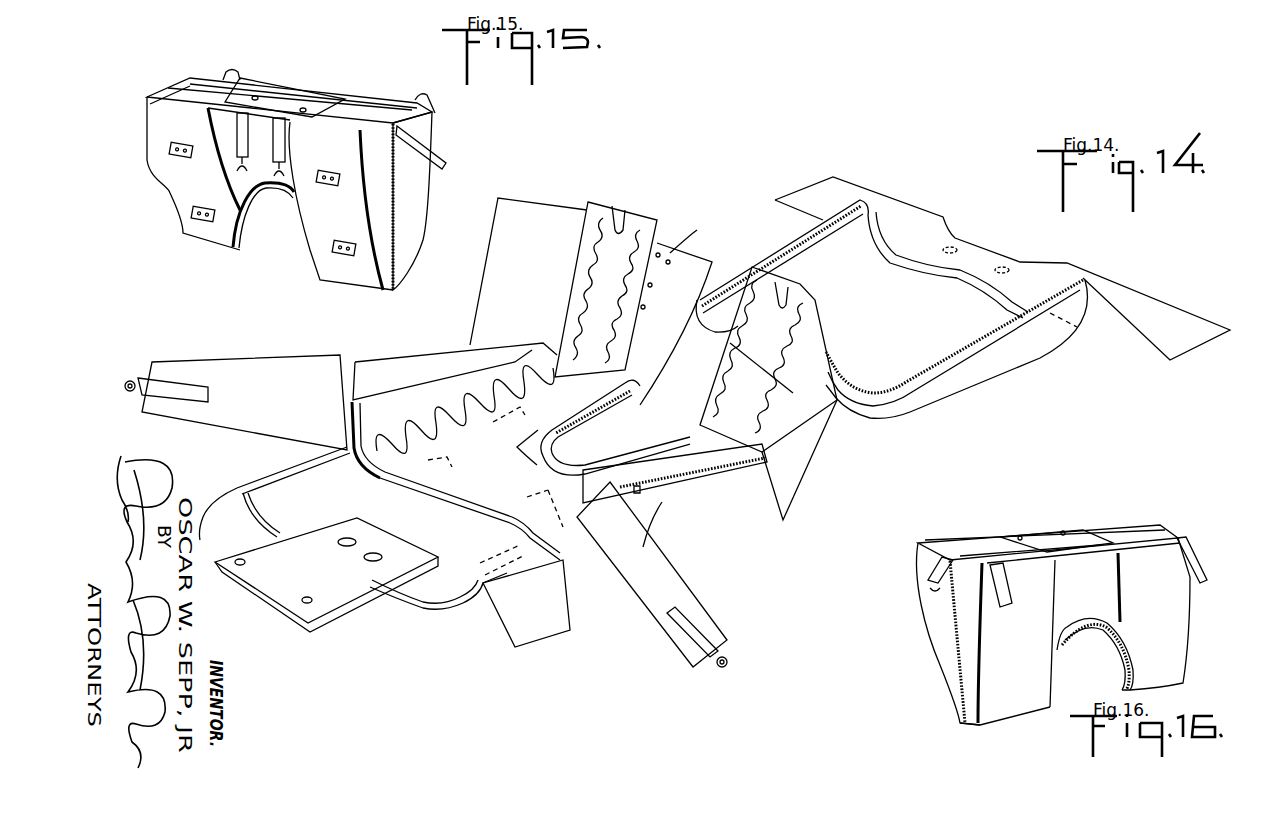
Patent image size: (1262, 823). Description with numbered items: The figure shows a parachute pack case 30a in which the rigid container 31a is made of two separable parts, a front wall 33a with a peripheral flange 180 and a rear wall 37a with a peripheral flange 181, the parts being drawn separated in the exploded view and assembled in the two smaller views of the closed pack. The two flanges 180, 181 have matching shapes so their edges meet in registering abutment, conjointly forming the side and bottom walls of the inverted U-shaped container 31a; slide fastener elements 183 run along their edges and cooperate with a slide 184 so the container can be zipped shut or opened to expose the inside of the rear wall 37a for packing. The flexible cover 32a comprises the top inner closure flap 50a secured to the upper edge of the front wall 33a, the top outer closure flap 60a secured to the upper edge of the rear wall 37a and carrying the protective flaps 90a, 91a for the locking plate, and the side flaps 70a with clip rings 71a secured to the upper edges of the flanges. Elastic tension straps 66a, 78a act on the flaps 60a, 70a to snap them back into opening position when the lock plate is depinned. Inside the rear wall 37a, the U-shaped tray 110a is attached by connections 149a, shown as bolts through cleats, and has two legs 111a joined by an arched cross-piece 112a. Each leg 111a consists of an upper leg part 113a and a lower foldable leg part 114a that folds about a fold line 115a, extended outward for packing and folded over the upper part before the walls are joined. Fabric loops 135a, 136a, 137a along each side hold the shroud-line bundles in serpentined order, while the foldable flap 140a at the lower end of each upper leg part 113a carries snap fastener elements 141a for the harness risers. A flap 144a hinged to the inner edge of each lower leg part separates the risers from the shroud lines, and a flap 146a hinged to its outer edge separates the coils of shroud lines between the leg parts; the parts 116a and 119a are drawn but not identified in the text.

In FIG. 15, the case 30a is at (165, 200).
In FIG. 14, the case 30a is at (693, 505).
In FIG. 15, the rigid container 31a is at (418, 238).
In FIG. 15, the flexible cover 32a is at (160, 90).
In FIG. 14, the flexible cover 32a is at (430, 622).
In FIG. 15, the front wall 33a is at (428, 195).
In FIG. 14, the front wall 33a is at (952, 395).
In FIG. 16, the front wall 33a is at (1177, 643).
In FIG. 15, the rear wall 37a is at (333, 210).
In FIG. 14, the rear wall 37a is at (715, 493).
In FIG. 14, the top inner closure flap 50a is at (983, 247).
In FIG. 14, the top outer closure flap 60a is at (408, 583).
In FIG. 15, the elastic tension strap 66a is at (200, 78).
In FIG. 16, the elastic tension strap 66a is at (930, 572).
In FIG. 15, the side flap 70a is at (215, 72).
In FIG. 14, the side flap 70a is at (250, 368).
In FIG. 16, the side flap 70a is at (958, 543).
In FIG. 14, the clip ring 71a is at (128, 380).
In FIG. 15, the elastic tension strap 78a is at (282, 150).
In FIG. 15, the protective flap 90a is at (285, 88).
In FIG. 14, the protective flap 90a is at (285, 605).
In FIG. 16, the protective flap 90a is at (1045, 535).
In FIG. 14, the protective flap 91a is at (265, 570).
In FIG. 14, the tray 110a is at (362, 450).
In FIG. 14, the leg 111a is at (508, 405).
In FIG. 14, the arched cross-piece 112a is at (487, 483).
In FIG. 14, the upper leg part 113a is at (407, 460).
In FIG. 14, the lower foldable leg part 114a is at (662, 225).
In FIG. 14, the fold line 115a is at (630, 372).
In FIG. 14, the pan floor 116a is at (487, 463).
In FIG. 14, the slot 119a is at (478, 548).
In FIG. 14, the fabric loop 135a is at (423, 432).
In FIG. 14, the fabric loop 136a is at (540, 462).
In FIG. 14, the fabric loop 137a is at (640, 246).
In FIG. 14, the foldable flap 140a is at (690, 262).
In FIG. 14, the snap fastener element 141a is at (672, 252).
In FIG. 14, the flap 144a is at (630, 203).
In FIG. 14, the flap 146a is at (497, 198).
In FIG. 15, the connection 149a is at (185, 158).
In FIG. 14, the connection 149a is at (470, 430).
In FIG. 14, the peripheral flange 180 is at (1007, 350).
In FIG. 16, the peripheral flange 180 is at (983, 703).
In FIG. 14, the peripheral flange 181 is at (643, 547).
In FIG. 16, the peripheral flange 181 is at (940, 610).
In FIG. 15, the slide fastener elements 183 is at (398, 265).
In FIG. 14, the slide fastener elements 183 is at (620, 407).
In FIG. 16, the slide fastener elements 183 is at (952, 678).
In FIG. 14, the slide 184 is at (637, 485).